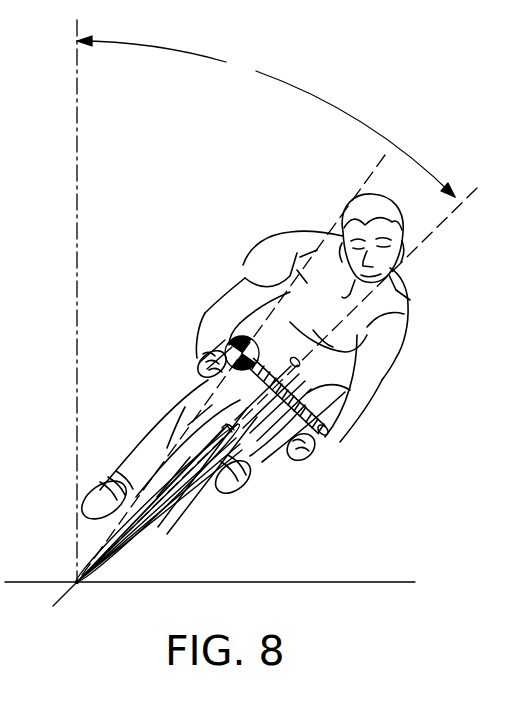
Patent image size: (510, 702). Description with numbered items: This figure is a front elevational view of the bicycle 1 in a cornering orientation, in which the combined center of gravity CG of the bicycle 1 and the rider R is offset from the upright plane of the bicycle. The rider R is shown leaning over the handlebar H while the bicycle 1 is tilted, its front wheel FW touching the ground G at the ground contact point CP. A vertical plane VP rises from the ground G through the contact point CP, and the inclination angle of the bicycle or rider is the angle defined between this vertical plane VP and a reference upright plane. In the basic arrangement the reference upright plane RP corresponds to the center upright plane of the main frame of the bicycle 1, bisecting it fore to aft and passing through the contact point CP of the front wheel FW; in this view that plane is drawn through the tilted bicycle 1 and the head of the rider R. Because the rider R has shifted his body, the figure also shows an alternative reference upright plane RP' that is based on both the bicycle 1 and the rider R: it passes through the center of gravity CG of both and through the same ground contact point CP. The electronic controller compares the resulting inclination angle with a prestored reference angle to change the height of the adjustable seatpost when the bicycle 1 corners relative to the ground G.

The bicycle 1 is at (258, 428).
The vertical plane VP is at (77, 97).
The reference upright plane RP is at (265, 397).
The reference upright plane RP' is at (231, 362).
The rider R is at (296, 230).
The center of gravity CG is at (242, 336).
The handlebar H is at (320, 408).
The front wheel FW is at (135, 539).
The ground contact point CP is at (80, 585).
The ground G is at (327, 582).